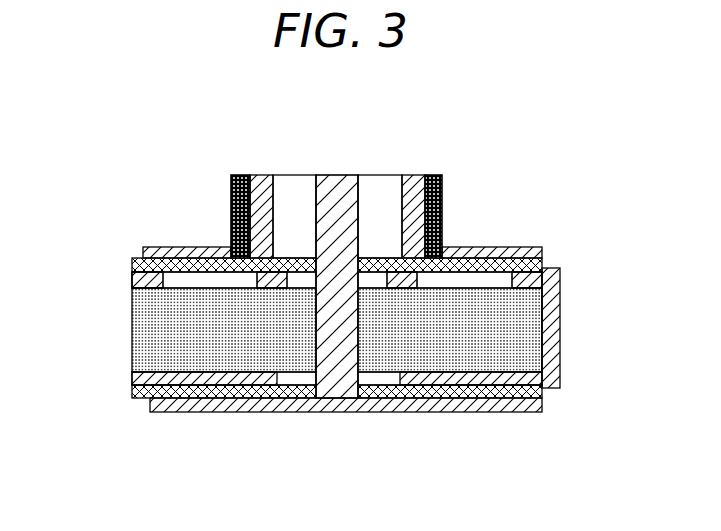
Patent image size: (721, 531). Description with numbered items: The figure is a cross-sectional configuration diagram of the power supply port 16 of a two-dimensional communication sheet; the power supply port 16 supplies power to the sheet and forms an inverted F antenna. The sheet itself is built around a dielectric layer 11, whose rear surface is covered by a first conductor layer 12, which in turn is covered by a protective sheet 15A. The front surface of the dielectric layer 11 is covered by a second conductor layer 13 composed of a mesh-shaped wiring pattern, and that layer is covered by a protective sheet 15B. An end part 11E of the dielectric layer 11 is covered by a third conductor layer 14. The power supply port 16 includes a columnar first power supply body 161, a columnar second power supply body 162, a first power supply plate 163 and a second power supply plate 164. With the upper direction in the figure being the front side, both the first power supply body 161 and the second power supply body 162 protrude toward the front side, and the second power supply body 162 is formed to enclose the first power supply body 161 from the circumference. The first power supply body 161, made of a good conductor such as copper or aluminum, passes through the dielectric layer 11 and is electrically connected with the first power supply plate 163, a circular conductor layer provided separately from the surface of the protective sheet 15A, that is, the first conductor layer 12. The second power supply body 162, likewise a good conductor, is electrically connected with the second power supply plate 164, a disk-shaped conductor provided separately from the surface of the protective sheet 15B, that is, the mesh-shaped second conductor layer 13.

The dielectric layer 11 is at (133, 323).
The end part of the dielectric layer 11E is at (548, 320).
The first conductor layer 12 is at (133, 378).
The second conductor layer 13 is at (133, 280).
The third conductor layer 14 is at (550, 272).
The protective sheet 15A is at (133, 397).
The protective sheet 15B is at (133, 263).
The power supply port 16 is at (336, 238).
The first power supply body 161 is at (342, 192).
The second power supply body 162 is at (418, 190).
The first power supply plate 163 is at (278, 405).
The second power supply plate 164 is at (497, 252).